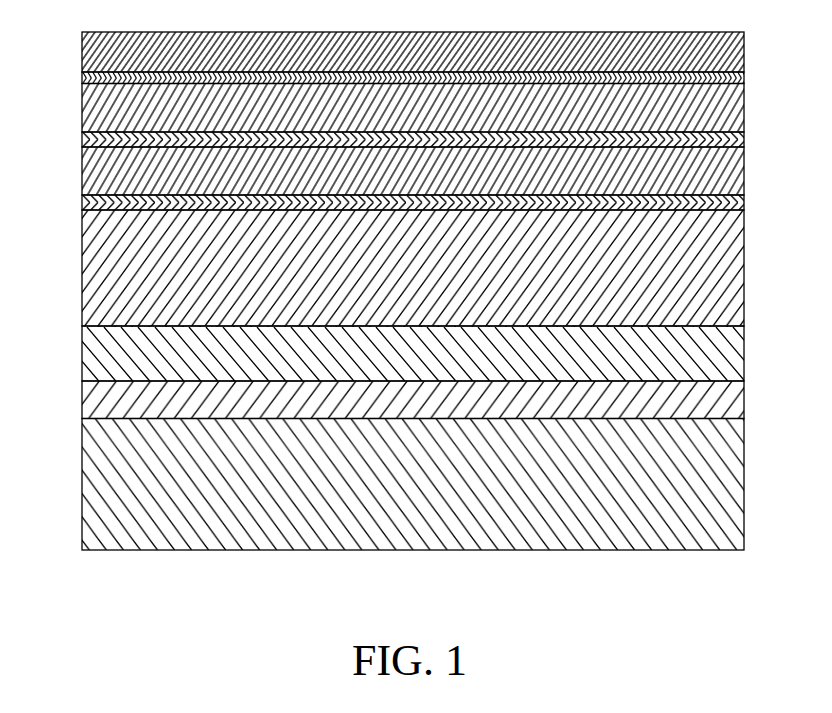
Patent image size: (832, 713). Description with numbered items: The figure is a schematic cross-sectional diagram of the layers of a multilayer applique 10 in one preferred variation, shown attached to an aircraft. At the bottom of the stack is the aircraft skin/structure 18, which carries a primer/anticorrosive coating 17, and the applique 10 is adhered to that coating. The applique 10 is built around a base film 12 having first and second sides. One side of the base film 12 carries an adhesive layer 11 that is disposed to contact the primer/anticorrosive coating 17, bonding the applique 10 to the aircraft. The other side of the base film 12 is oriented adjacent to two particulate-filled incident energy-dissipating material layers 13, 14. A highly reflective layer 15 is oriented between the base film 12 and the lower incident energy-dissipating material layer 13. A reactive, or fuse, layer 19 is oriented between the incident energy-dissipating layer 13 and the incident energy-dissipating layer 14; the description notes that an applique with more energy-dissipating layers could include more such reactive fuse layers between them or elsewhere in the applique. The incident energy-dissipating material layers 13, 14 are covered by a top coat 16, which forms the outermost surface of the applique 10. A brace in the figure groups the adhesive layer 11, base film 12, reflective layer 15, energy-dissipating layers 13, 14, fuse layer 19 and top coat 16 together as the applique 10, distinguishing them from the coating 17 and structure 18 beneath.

The applique 10 is at (413, 205).
The adhesive layer 11 is at (88, 348).
The base film 12 is at (88, 262).
The incident energy-dissipating material layer 13 is at (88, 167).
The incident energy-dissipating material layer 14 is at (88, 99).
The highly reflective layer 15 is at (88, 202).
The top coat 16 is at (88, 51).
The primer/anticorrosive coating 17 is at (88, 402).
The aircraft skin/structure 18 is at (88, 491).
The reactive or fuse layer 19 is at (88, 139).